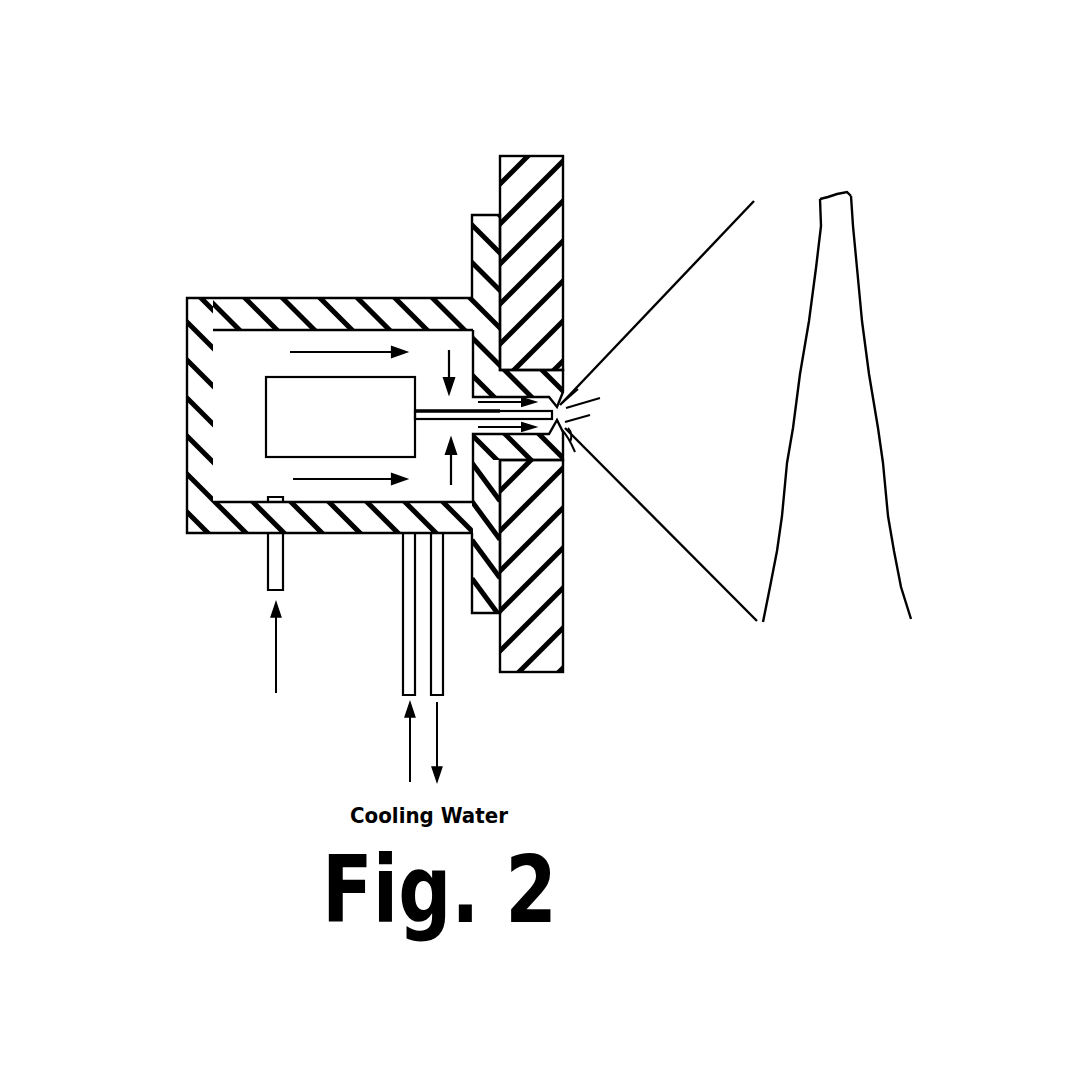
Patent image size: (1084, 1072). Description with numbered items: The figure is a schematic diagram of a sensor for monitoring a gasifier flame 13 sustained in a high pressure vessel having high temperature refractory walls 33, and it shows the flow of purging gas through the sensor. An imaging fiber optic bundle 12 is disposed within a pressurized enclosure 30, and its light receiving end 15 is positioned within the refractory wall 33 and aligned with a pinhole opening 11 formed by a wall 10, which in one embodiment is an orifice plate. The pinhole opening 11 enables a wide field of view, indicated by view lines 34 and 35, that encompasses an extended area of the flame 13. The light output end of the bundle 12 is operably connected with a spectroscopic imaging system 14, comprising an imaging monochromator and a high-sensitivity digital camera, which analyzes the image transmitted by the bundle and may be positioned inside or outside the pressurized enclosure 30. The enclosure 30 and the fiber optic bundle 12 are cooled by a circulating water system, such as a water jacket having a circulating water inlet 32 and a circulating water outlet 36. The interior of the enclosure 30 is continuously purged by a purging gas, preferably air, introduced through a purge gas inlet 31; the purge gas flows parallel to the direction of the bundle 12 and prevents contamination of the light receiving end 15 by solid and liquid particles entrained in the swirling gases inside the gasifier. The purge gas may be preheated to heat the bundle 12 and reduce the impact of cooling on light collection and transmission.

The wall 10 is at (570, 425).
The pinhole opening 11 is at (573, 408).
The imaging fiber optic bundle 12 is at (450, 411).
The gasifier flame 13 is at (820, 224).
The spectroscopic imaging system 14 is at (265, 421).
The light receiving end 15 is at (567, 427).
The pressurized enclosure 30 is at (358, 299).
The purge gas inlet 31 is at (262, 557).
The circulating water inlet 32 is at (403, 620).
The refractory wall 33 is at (563, 190).
The view line 34 is at (705, 568).
The view line 35 is at (653, 303).
The circulating water outlet 36 is at (443, 630).